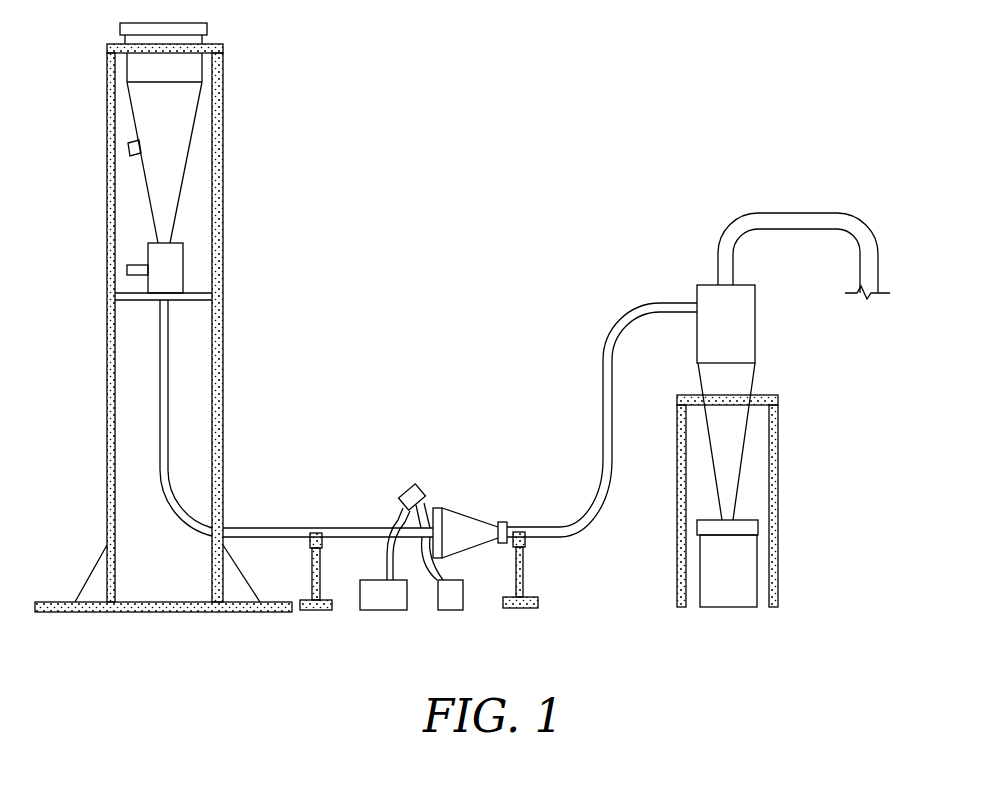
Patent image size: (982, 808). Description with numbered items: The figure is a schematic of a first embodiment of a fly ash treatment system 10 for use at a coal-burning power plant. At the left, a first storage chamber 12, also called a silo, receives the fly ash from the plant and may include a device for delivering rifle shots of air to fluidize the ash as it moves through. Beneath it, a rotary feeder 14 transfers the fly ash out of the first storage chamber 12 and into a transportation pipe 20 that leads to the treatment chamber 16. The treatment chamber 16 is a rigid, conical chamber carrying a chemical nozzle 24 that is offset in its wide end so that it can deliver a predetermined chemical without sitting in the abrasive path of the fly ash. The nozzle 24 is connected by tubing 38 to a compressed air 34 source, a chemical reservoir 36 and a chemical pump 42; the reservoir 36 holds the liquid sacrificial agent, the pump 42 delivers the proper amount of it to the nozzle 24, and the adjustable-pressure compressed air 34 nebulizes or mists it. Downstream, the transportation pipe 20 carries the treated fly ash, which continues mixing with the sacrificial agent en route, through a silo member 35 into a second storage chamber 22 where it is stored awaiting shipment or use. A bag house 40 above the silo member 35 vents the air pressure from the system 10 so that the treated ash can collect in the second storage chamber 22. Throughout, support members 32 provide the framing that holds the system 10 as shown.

The fly ash treatment system 10 is at (540, 162).
The first storage chamber 12 is at (180, 112).
The rotary feeder 14 is at (175, 262).
The treatment chamber 16 is at (457, 520).
The transportation pipe 20 is at (173, 503).
The second storage chamber 22 is at (745, 575).
The chemical nozzle 24 is at (424, 520).
The support members 32 is at (223, 162).
The compressed air source 34 is at (455, 600).
The silo member 35 is at (742, 373).
The chemical reservoir 36 is at (378, 603).
The tubing 38 is at (392, 517).
The bag house 40 is at (802, 218).
The chemical pump 42 is at (405, 487).